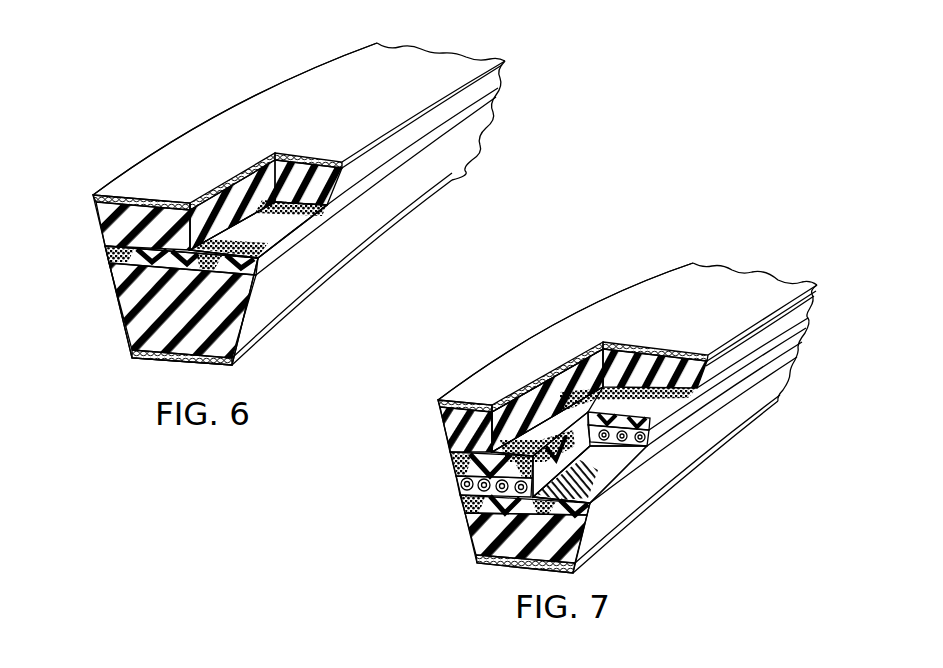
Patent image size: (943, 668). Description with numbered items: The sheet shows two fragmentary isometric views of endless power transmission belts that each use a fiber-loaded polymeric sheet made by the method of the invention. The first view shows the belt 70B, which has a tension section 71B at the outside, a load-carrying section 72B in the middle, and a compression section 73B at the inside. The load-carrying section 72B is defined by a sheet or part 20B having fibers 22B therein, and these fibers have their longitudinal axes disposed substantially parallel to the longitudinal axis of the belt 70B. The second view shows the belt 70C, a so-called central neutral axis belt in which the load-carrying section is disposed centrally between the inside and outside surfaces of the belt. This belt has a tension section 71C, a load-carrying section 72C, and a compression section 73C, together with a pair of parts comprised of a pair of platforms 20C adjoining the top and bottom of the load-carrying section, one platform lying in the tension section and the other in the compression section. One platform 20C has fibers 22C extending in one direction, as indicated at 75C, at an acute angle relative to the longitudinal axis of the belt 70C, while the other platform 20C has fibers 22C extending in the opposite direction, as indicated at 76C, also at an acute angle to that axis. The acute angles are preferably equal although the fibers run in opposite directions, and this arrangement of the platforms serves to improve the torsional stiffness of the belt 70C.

In FIG. 6, the belt 70B is at (242, 91).
In FIG. 6, the tension section 71B is at (93, 218).
In FIG. 6, the load-carrying section 72B is at (100, 258).
In FIG. 6, the sheet or part 20B is at (117, 287).
In FIG. 6, the compression section 73B is at (117, 327).
In FIG. 6, the fibers 22B is at (268, 252).
In FIG. 7, the belt 70C is at (624, 276).
In FIG. 7, the tension section 71C is at (437, 432).
In FIG. 7, the load-carrying section 72C is at (450, 483).
In FIG. 7, the compression section 73C is at (462, 535).
In FIG. 7, the fiber direction 75C is at (627, 405).
In FIG. 7, the opposite fiber direction 76C is at (590, 490).
In FIG. 7, the platforms 20C is at (635, 475).
In FIG. 7, the fibers 22C is at (590, 372).